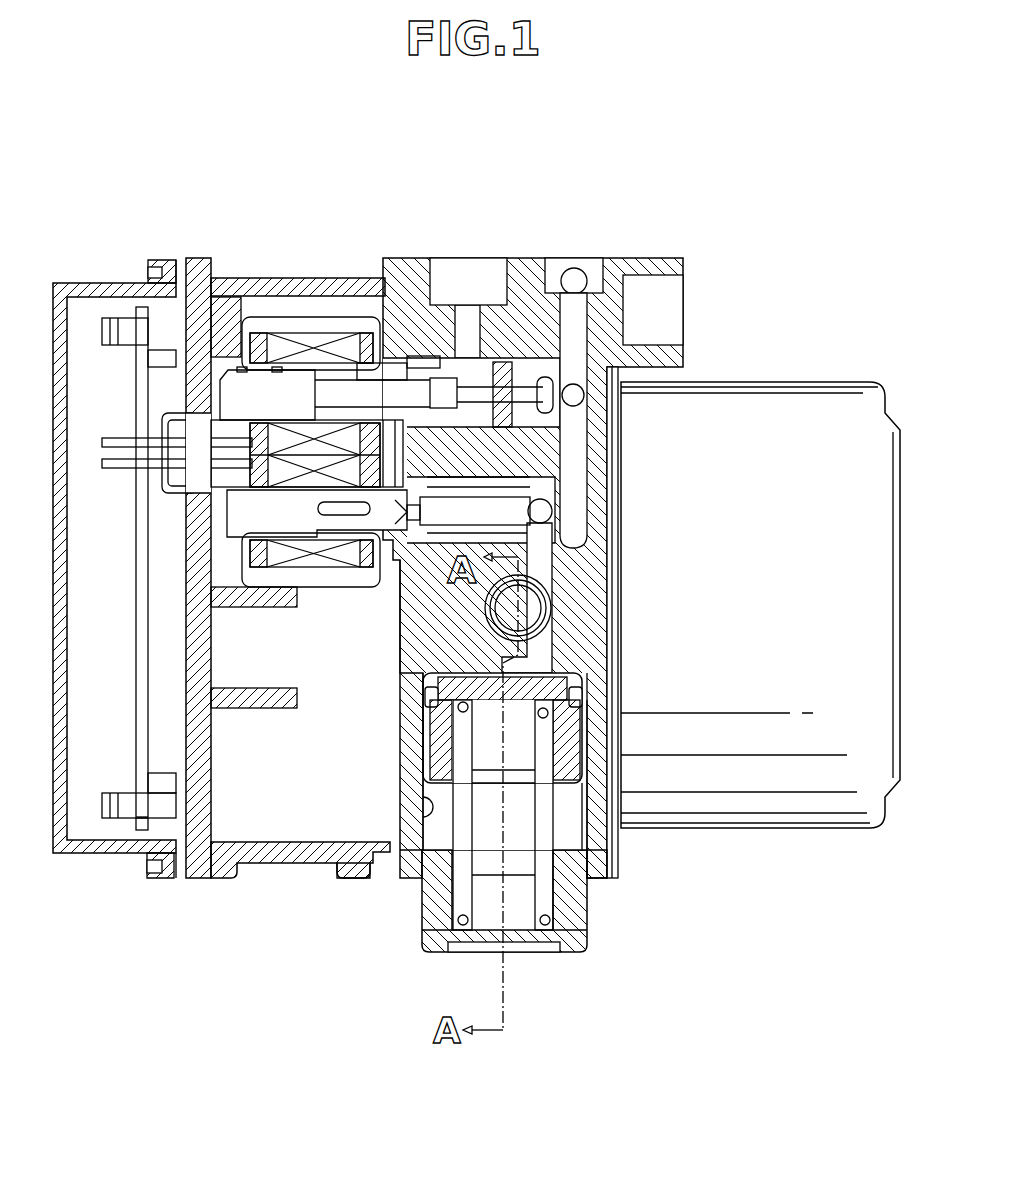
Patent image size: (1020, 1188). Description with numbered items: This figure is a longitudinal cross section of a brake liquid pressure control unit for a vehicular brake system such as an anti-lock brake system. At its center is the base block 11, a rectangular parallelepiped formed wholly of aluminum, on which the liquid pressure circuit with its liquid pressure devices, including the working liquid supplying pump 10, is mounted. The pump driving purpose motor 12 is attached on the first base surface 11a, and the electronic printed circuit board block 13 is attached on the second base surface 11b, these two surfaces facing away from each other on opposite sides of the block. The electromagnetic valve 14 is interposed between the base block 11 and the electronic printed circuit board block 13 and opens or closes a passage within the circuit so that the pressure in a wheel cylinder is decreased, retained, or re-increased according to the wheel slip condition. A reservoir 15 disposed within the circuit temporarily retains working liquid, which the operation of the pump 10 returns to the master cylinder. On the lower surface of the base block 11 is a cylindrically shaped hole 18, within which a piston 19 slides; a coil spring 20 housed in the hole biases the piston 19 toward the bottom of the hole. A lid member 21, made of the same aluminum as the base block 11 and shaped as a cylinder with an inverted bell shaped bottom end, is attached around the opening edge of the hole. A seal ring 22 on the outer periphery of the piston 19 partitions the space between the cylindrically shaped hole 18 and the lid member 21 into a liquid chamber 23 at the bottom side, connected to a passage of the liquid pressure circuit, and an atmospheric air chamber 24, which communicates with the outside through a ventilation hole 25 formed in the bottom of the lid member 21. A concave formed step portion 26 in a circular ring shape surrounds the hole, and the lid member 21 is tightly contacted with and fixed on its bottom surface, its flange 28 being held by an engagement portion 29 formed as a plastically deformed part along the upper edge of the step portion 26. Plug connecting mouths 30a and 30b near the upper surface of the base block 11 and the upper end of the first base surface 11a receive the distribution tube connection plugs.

The working liquid supplying pump 10 is at (530, 612).
The base block 11 is at (634, 246).
The first base surface 11a is at (614, 438).
The second base surface 11b is at (376, 298).
The pump driving purpose motor 12 is at (875, 368).
The electronic printed circuit board block 13 is at (66, 276).
The electromagnetic valve 14 is at (340, 358).
The reservoir 15 is at (593, 787).
The cylindrically shaped hole 18 is at (430, 808).
The piston 19 is at (572, 735).
The coil spring 20 is at (580, 933).
The lid member 21 is at (433, 895).
The seal ring 22 is at (583, 697).
The liquid chamber 23 is at (423, 677).
The atmospheric air chamber 24 is at (480, 902).
The ventilation hole 25 is at (510, 943).
The concave formed step portion 26 is at (380, 877).
The flange 28 is at (588, 860).
The engagement portion 29 is at (588, 880).
The plug connecting mouth 30a is at (473, 268).
The plug connecting mouth 30b is at (645, 290).